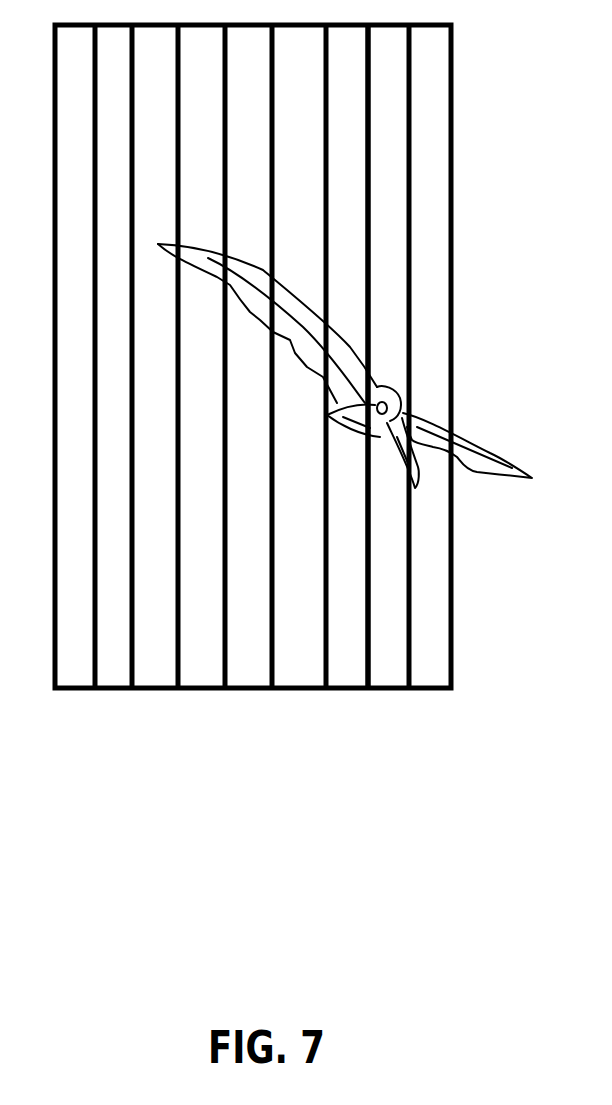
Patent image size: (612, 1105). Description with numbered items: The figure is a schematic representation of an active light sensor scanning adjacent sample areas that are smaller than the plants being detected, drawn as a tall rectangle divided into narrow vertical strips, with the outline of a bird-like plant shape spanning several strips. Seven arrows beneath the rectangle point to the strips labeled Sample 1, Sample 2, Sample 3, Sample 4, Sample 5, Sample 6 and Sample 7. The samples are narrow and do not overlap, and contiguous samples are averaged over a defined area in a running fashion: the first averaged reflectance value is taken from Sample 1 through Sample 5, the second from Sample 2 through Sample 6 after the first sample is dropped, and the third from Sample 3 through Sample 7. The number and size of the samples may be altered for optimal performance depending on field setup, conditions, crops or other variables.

The Sample 1 is at (76, 708).
The Sample 2 is at (113, 708).
The Sample 3 is at (157, 708).
The Sample 4 is at (207, 708).
The Sample 5 is at (256, 708).
The Sample 6 is at (305, 708).
The Sample 7 is at (354, 708).